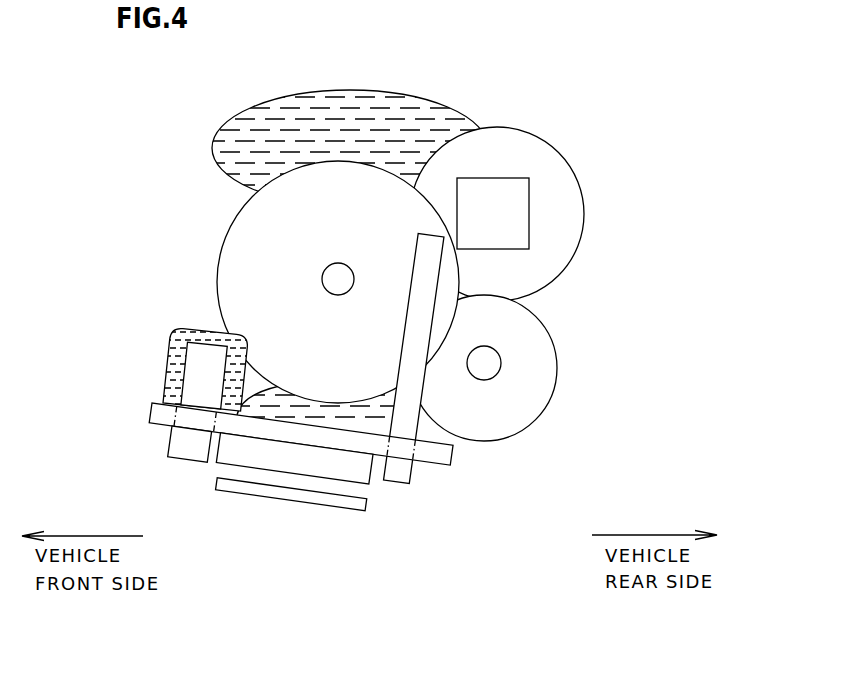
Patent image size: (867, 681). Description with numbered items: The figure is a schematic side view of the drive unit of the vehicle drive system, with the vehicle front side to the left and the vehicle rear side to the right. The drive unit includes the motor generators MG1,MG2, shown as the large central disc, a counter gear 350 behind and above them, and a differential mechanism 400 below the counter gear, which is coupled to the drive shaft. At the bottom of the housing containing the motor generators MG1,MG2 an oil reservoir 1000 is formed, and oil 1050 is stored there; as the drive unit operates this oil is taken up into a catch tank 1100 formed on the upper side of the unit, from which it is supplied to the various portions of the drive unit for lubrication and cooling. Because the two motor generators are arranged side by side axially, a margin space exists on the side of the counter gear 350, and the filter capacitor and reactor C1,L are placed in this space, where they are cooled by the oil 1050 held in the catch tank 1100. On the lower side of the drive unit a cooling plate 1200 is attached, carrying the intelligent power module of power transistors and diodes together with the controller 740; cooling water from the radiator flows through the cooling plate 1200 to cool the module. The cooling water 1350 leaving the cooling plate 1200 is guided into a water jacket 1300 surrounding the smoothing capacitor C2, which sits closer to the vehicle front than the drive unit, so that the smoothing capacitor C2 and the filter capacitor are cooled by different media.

The catch tank 1100 is at (400, 93).
The oil 1050 is at (258, 118).
The counter gear 350 is at (559, 153).
The filter capacitor and reactor C1,L is at (532, 212).
The motor generators MG1,MG2 is at (228, 223).
The differential mechanism 400 is at (543, 427).
The water jacket 1300 is at (165, 357).
The cooling water 1350 is at (200, 323).
The oil reservoir 1000 is at (383, 423).
The cooling plate 1200 is at (257, 430).
The smoothing capacitor C2 is at (190, 453).
The controller 740 is at (360, 512).